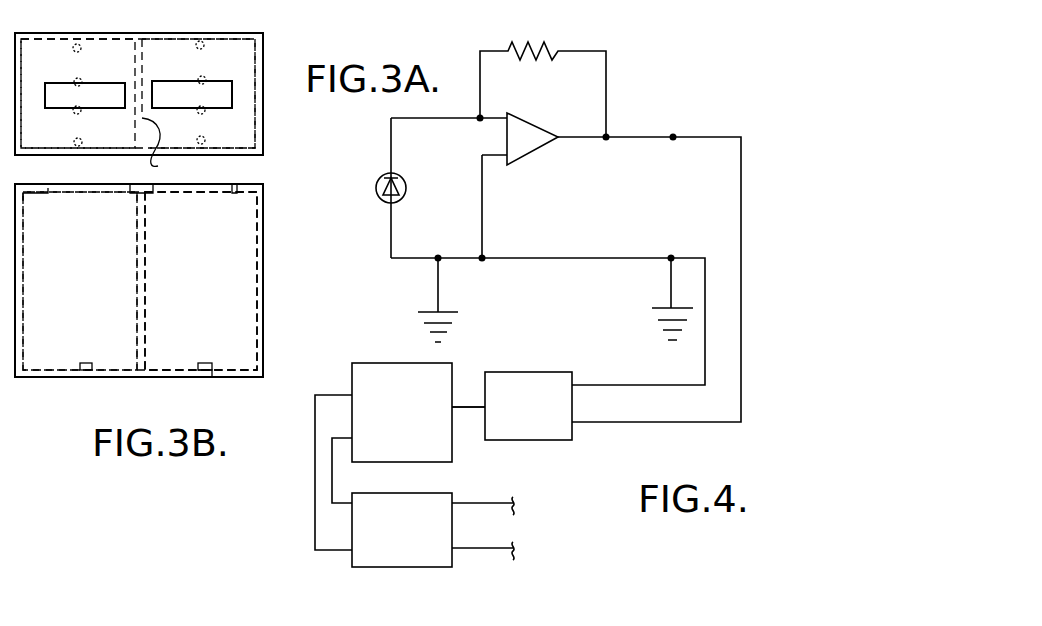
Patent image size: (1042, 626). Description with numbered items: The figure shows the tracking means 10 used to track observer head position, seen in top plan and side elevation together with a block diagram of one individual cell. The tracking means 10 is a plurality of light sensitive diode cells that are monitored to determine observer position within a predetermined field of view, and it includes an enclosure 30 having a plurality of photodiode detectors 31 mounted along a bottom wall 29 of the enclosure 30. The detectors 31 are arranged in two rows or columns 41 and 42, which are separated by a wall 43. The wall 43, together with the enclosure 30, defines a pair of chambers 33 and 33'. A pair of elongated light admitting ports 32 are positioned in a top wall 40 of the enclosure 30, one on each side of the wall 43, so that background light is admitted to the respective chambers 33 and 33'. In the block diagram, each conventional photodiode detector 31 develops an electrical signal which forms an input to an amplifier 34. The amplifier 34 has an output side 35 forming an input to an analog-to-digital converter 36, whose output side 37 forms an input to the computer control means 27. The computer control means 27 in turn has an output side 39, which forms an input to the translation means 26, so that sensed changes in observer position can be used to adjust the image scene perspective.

In FIG. 3A, the tracking means 10 is at (283, 48).
In FIG. 3A, the enclosure 30 is at (265, 42).
In FIG. 3A, the photodiode detectors 31 is at (207, 45).
In FIG. 3B, the photodiode detectors 31 is at (212, 365).
In FIG. 4, the photodiode detectors 31 is at (377, 183).
In FIG. 3A, the light admitting ports 32 is at (100, 82).
In FIG. 3B, the light admitting ports 32 is at (232, 184).
In FIG. 3A, the top wall 40 is at (168, 62).
In FIG. 3A, the row 41 is at (54, 37).
In FIG. 3B, the row 41 is at (57, 356).
In FIG. 3A, the row 42 is at (196, 32).
In FIG. 3B, the row 42 is at (221, 314).
In FIG. 3A, the wall 43 is at (164, 148).
In FIG. 3B, the wall 43 is at (137, 238).
In FIG. 3B, the chamber 33 is at (80, 281).
In FIG. 3B, the chamber 33' is at (201, 281).
In FIG. 3B, the bottom wall 29 is at (205, 377).
In FIG. 4, the amplifier 34 is at (518, 141).
In FIG. 4, the output side 35 is at (580, 140).
In FIG. 4, the analog-to-digital converter 36 is at (508, 382).
In FIG. 4, the output side 37 is at (460, 400).
In FIG. 4, the computer control means 27 is at (410, 373).
In FIG. 4, the translation means 26 is at (423, 493).
In FIG. 4, the output side 39 is at (333, 386).